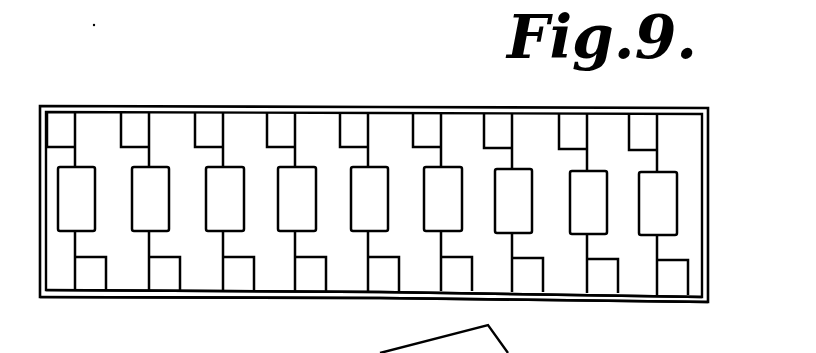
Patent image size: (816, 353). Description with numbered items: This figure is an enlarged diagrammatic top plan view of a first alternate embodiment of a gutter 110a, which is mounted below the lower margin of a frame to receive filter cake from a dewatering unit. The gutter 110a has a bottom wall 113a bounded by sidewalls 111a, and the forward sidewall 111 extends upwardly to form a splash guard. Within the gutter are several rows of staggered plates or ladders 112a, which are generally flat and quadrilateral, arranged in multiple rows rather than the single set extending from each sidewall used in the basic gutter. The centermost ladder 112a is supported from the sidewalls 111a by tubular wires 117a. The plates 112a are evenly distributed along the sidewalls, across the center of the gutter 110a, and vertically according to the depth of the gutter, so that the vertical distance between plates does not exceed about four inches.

The gutter 110a is at (358, 38).
The sidewall 111 is at (318, 107).
The sidewalls 111a is at (270, 300).
The staggered plates or ladders 112a is at (452, 178).
The bottom wall 113a is at (205, 300).
The tubular wires 117a is at (227, 153).